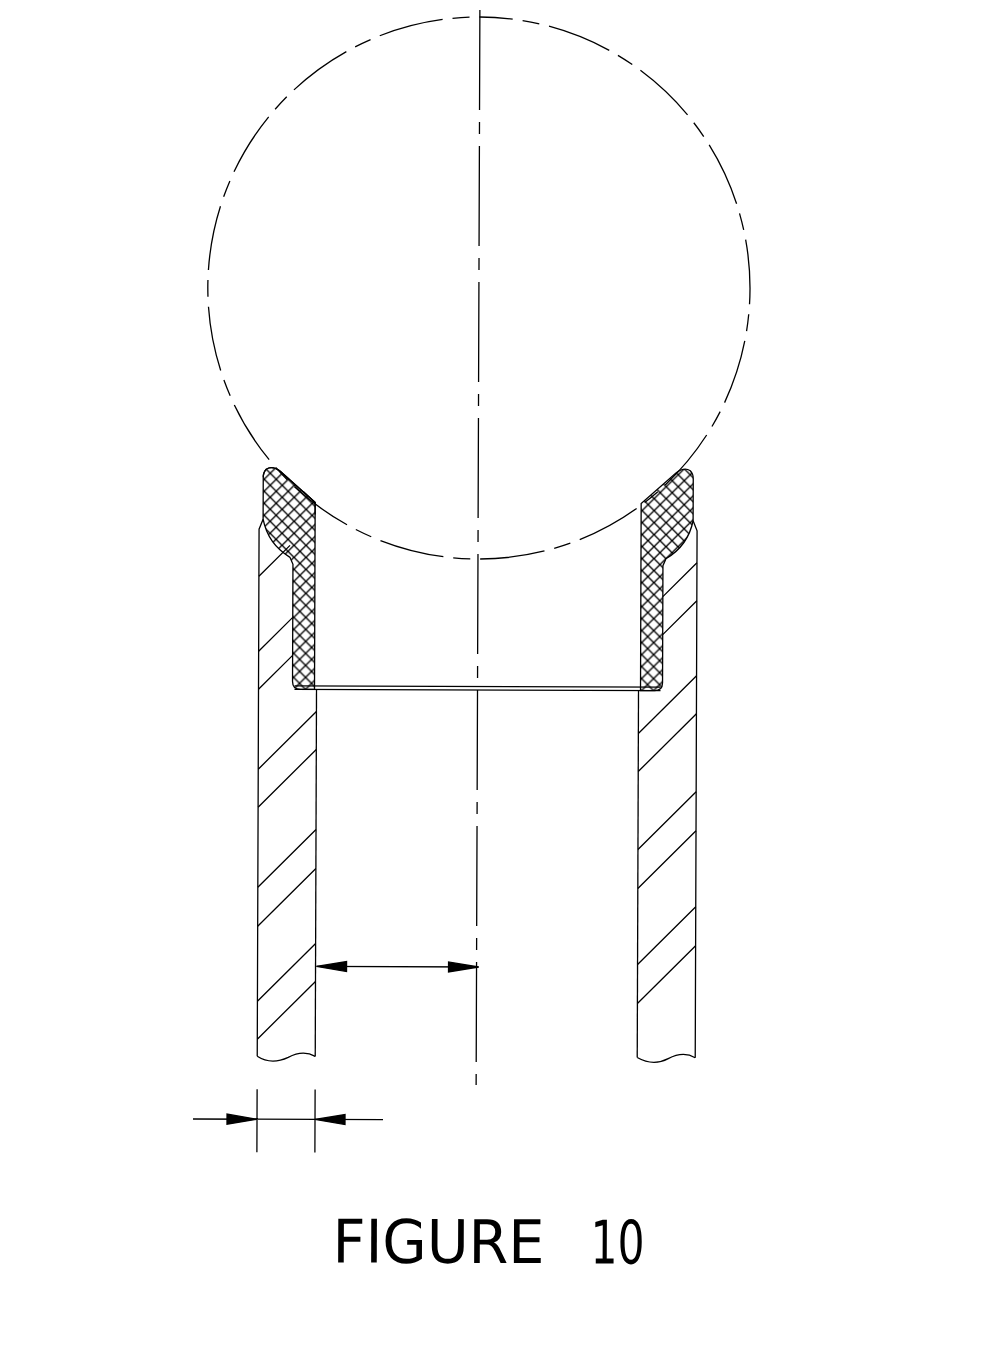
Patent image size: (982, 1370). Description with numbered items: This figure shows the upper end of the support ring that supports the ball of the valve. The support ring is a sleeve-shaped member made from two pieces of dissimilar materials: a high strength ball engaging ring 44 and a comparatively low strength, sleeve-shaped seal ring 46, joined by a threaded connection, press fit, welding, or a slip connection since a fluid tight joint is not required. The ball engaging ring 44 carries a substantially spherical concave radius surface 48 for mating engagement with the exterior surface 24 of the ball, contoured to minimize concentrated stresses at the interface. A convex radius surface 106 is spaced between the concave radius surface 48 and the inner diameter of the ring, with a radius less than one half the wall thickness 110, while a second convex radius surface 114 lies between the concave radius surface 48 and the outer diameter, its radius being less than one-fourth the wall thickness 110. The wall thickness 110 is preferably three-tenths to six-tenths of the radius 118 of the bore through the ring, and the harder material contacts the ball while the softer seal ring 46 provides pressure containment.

The exterior surface 24 is at (720, 412).
The ball engaging ring 44 is at (313, 630).
The seal ring 46 is at (303, 825).
The concave radius surface 48 is at (292, 485).
The convex radius surface 106 is at (313, 508).
The wall thickness 110 is at (246, 1121).
The second convex radius surface 114 is at (273, 472).
The radius 118 is at (398, 940).